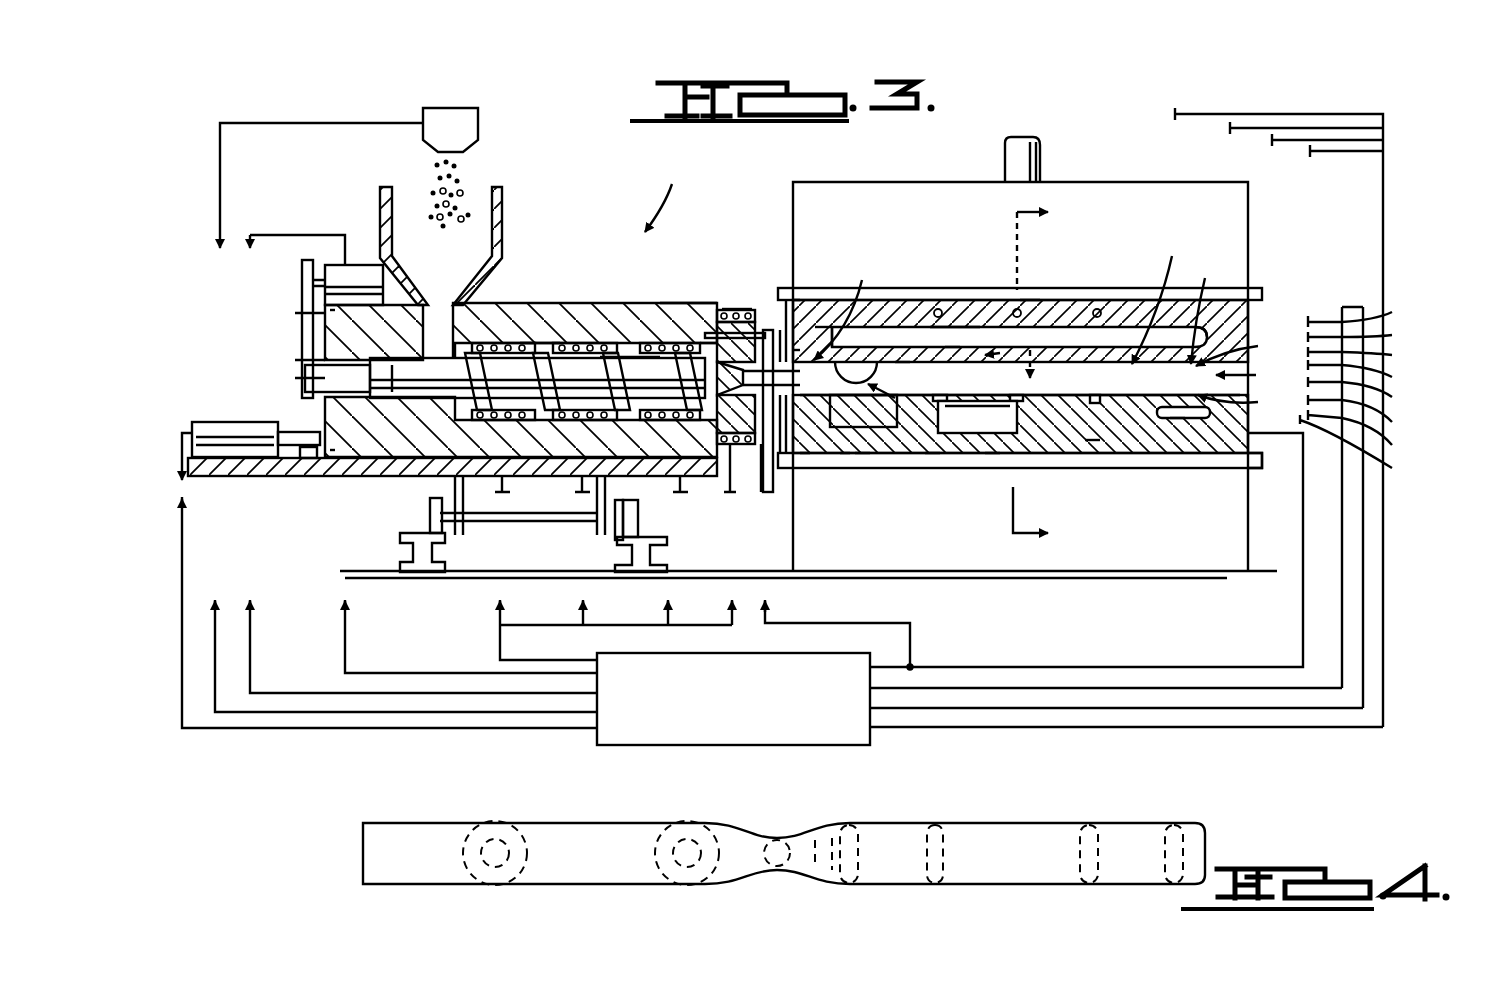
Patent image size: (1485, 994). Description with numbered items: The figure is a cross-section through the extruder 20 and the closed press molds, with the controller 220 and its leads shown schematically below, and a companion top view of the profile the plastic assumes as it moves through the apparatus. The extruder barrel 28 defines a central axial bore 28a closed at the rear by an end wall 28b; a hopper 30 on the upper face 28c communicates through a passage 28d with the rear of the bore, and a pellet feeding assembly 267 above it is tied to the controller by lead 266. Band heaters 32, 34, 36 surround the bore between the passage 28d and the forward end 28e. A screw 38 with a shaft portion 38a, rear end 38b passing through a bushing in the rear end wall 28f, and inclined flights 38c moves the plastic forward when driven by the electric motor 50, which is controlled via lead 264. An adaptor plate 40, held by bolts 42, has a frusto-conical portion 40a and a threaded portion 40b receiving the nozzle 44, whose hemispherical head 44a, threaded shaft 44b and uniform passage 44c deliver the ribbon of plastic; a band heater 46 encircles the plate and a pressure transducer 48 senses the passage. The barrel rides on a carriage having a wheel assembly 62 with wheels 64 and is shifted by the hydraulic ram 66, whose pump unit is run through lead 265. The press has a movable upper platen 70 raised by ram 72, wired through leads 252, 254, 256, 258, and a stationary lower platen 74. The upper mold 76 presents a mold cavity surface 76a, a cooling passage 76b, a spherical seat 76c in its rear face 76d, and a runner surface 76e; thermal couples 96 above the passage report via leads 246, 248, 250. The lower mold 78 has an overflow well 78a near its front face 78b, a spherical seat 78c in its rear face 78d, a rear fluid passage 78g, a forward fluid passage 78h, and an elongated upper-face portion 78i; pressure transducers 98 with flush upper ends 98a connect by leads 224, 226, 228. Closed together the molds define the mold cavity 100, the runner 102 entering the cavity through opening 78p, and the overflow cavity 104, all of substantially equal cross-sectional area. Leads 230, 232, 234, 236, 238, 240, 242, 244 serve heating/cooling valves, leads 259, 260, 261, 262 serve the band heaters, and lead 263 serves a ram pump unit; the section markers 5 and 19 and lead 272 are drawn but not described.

The extruder 20 is at (969, 284).
The barrel member 28 is at (560, 290).
The central axial bore 28a is at (628, 350).
The end wall 28b is at (375, 400).
The upper face of barrel 28c is at (692, 304).
The passage 28d is at (428, 331).
The forward end of barrel 28e is at (722, 322).
The rear end wall 28f is at (302, 316).
The hopper 30 is at (501, 199).
The band heater 32 is at (503, 342).
The band heater 34 is at (579, 343).
The band heater 36 is at (665, 343).
The screw 38 is at (583, 400).
The shaft portion 38a is at (428, 392).
The rear end of shaft 38b is at (328, 383).
The flights 38c is at (545, 356).
The adaptor plate 40 is at (275, 349).
The frusto-conical passage portion 40a is at (725, 385).
The cylindrical threaded portion 40b is at (794, 350).
The bolts 42 is at (750, 321).
The nozzle 44 is at (851, 307).
The hemispherical head portion 44a is at (800, 466).
The threaded shaft portion 44b is at (773, 492).
The central axial passage 44c is at (815, 360).
The band heater 46 is at (754, 306).
The pressure transducer 48 is at (726, 472).
The electric motor 50 is at (358, 277).
The wheel assembly 62 is at (408, 513).
The wheels 64 is at (631, 520).
The hydraulic ram 66 is at (217, 425).
The movable upper platen 70 is at (1248, 218).
The ram 72 is at (1005, 156).
The stationary lower platen 74 is at (1227, 540).
The upper mold 76 is at (1248, 300).
The mold cavity surface 76a is at (1082, 362).
The cooling passage 76b is at (903, 361).
The spherical seat 76c is at (821, 326).
The rear face of upper mold 76d is at (796, 300).
The runner surface 76e is at (903, 394).
The lower mold 78 is at (1248, 502).
The overflow well 78a is at (930, 535).
The front face of lower mold 78b is at (1273, 436).
The spherical seat 78c is at (845, 468).
The rear face of lower mold 78d is at (803, 468).
The rear fluid passage 78g is at (863, 403).
The forward fluid passage 78h is at (1177, 418).
The elongated portion of upper face 78i is at (977, 410).
The opening 78p is at (956, 337).
The thermal couples 96 is at (1097, 309).
The pressure transducers 98 is at (1018, 435).
The upper ends of transducers 98a is at (1071, 410).
The mold cavity 100 is at (1218, 306).
The runner 102 is at (861, 468).
The overflow cavity 104 is at (1158, 412).
The flow direction 19 is at (1008, 341).
The section line 5- 5 is at (1045, 381).
The controller 220 is at (853, 728).
The lead 224 is at (932, 468).
The lead 226 is at (991, 468).
The lead 228 is at (1092, 440).
The lead 230 is at (1375, 313).
The lead 232 is at (1375, 335).
The lead 234 is at (1375, 355).
The lead 236 is at (1375, 375).
The lead 238 is at (1375, 393).
The lead 240 is at (1375, 415).
The lead 242 is at (1375, 434).
The lead 244 is at (1371, 448).
The lead 246 is at (952, 345).
The lead 248 is at (1030, 300).
The lead 250 is at (1174, 297).
The lead 252 is at (1178, 118).
The lead 254 is at (1230, 134).
The lead 256 is at (1272, 146).
The lead 258 is at (1338, 156).
The lead 259 is at (498, 613).
The lead 260 is at (580, 614).
The lead 261 is at (665, 614).
The lead 262 is at (730, 613).
The lead 263 is at (348, 661).
The lead 264 is at (300, 235).
The lead 265 is at (184, 568).
The lead 266 is at (220, 157).
The plastic pellet feeding assembly 267 is at (465, 124).
The controller output line 272 is at (913, 640).